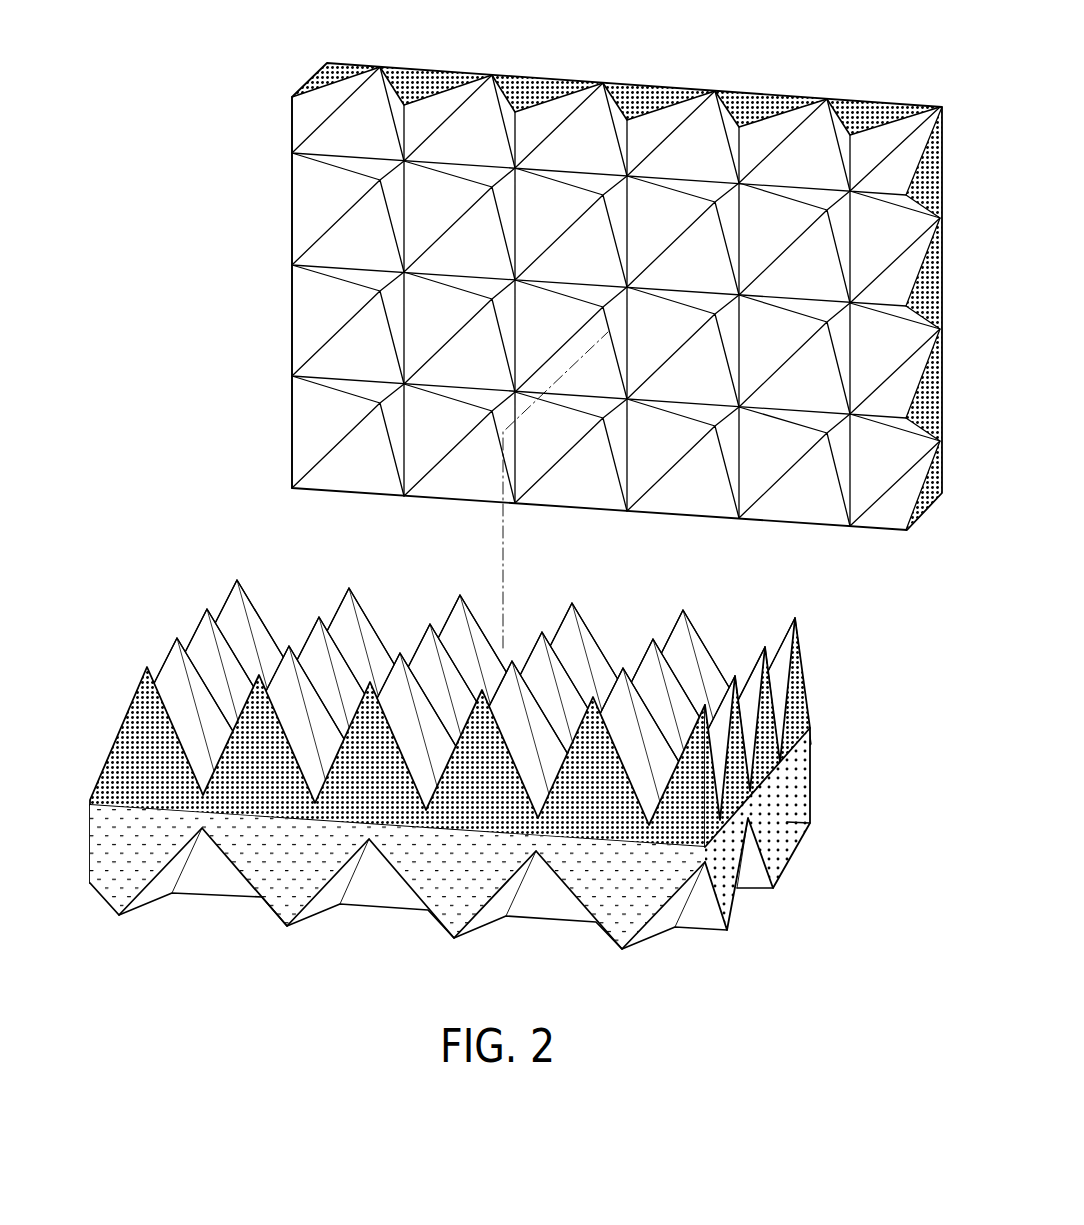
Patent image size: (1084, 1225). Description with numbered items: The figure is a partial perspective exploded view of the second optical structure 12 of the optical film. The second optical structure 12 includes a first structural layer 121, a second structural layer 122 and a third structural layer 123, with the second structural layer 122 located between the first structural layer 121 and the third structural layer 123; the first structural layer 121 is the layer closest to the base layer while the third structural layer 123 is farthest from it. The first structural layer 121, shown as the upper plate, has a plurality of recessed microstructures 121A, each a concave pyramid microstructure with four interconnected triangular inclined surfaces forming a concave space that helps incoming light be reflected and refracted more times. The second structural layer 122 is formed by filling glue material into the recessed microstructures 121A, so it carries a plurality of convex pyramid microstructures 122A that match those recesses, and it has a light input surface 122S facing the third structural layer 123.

The second optical structure 12 is at (881, 50).
The first structural layer 121 is at (290, 217).
The recessed microstructure 121A is at (328, 92).
The second structural layer 122 is at (200, 624).
The convex microstructure 122A is at (140, 727).
The light input surface 122S is at (252, 832).
The third structural layer 123 is at (623, 917).